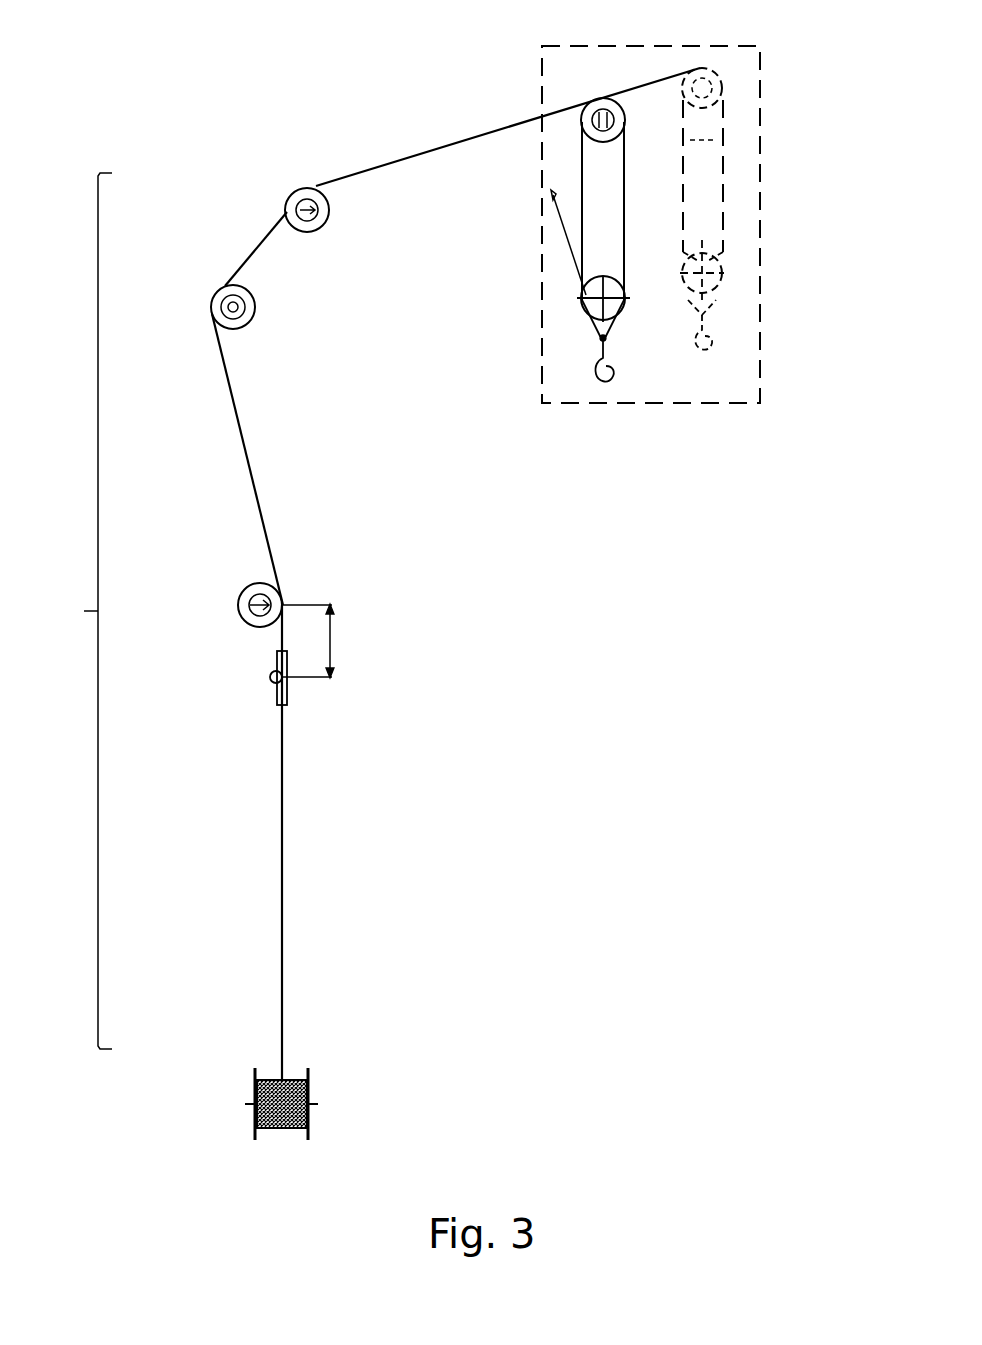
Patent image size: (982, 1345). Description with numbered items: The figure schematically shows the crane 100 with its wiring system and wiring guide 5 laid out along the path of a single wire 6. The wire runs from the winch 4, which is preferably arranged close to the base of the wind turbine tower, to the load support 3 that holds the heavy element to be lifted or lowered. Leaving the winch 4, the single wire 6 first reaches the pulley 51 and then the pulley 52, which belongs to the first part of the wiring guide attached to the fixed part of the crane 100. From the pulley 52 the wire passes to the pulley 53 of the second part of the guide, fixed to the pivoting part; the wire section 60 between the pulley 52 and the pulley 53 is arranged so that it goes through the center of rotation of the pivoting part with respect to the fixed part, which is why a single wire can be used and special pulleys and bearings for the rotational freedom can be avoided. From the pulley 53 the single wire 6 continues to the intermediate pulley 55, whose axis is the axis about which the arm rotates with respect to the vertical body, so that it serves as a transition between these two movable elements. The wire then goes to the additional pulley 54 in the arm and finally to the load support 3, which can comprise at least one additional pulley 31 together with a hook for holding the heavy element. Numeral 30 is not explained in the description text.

The crane 100 is at (264, 104).
The load support 3 is at (551, 72).
The winch 4 is at (312, 1086).
The wiring guide 5 is at (70, 611).
The single wire 6 is at (285, 881).
The hook block 30 is at (598, 380).
The additional pulley 31 is at (626, 120).
The pulley 51 is at (276, 684).
The pulley 52 is at (280, 690).
The pulley 53 is at (258, 585).
The additional pulley 54 is at (328, 220).
The intermediate pulley 55 is at (252, 320).
The wire section 60 is at (332, 641).